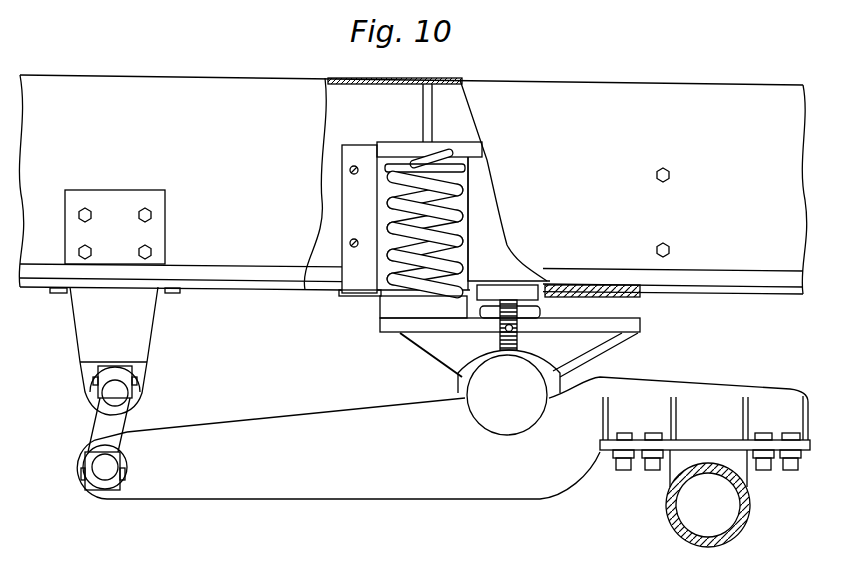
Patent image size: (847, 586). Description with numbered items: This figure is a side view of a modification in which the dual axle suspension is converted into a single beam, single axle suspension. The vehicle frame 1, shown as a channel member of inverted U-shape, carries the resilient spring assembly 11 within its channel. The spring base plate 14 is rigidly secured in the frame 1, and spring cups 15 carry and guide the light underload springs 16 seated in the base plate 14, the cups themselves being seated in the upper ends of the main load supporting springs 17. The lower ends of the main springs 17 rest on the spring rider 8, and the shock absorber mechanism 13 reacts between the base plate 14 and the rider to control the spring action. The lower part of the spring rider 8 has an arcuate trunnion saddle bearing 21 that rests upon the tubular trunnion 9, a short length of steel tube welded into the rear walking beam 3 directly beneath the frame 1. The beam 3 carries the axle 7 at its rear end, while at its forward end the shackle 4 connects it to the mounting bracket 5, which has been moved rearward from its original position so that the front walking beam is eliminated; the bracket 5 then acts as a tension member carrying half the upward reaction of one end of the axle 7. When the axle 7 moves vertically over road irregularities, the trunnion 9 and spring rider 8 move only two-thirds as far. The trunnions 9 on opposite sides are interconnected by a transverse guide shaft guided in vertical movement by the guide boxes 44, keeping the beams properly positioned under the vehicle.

The frame 1 is at (596, 92).
The rear walking beam 3 is at (253, 428).
The shackle 4 is at (102, 425).
The bracket 5 is at (143, 323).
The axle 7 is at (676, 530).
The spring rider 8 is at (413, 336).
The trunnion 9 is at (463, 395).
The spring assembly 11 is at (362, 197).
The shock absorber mechanism 13 is at (497, 245).
The spring base plate 14 is at (378, 142).
The spring cups 15 is at (443, 168).
The underload springs 16 is at (440, 152).
The main load supporting springs 17 is at (458, 193).
The trunnion saddle bearing 21 is at (473, 363).
The guide boxes 44 is at (553, 388).